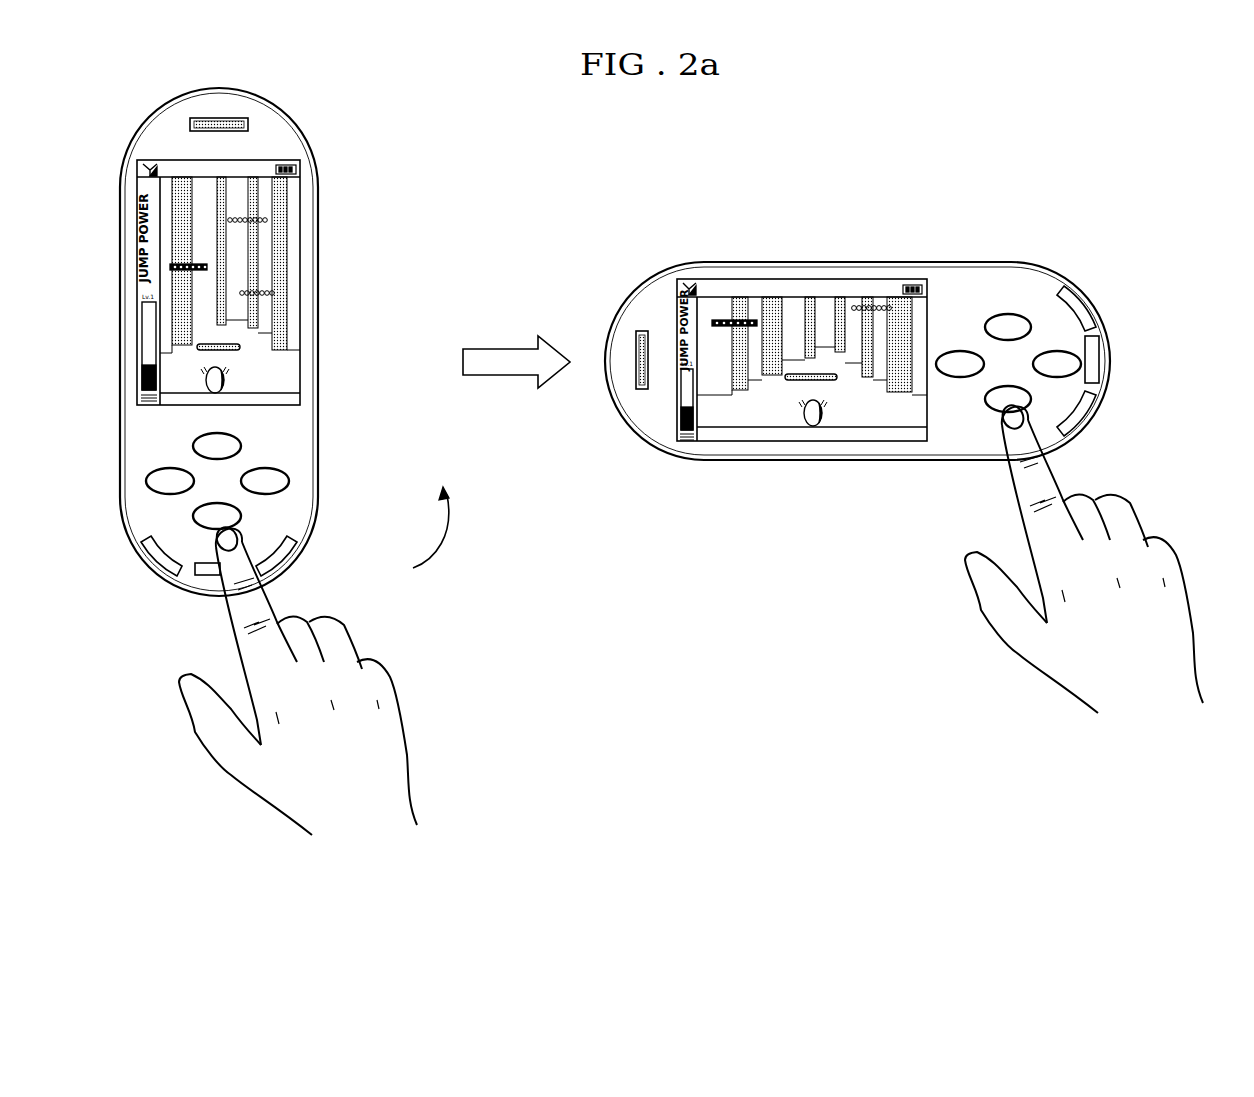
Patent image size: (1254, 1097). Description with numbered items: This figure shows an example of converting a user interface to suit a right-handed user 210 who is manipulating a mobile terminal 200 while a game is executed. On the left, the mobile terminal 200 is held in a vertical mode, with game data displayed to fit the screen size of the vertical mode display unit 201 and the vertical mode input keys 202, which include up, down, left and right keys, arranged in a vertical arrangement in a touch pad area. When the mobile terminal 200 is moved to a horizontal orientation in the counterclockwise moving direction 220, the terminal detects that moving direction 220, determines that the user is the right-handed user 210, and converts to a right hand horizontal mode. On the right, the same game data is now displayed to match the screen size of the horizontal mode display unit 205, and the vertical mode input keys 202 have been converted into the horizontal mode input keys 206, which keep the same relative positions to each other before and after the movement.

The mobile terminal 200 is at (293, 142).
The vertical mode display unit 201 is at (300, 297).
The vertical mode input keys 202 is at (278, 461).
The horizontal mode display unit 205 is at (833, 280).
The horizontal mode input keys 206 is at (994, 290).
The right-handed user 210 is at (1137, 515).
The moving direction 220 is at (447, 537).